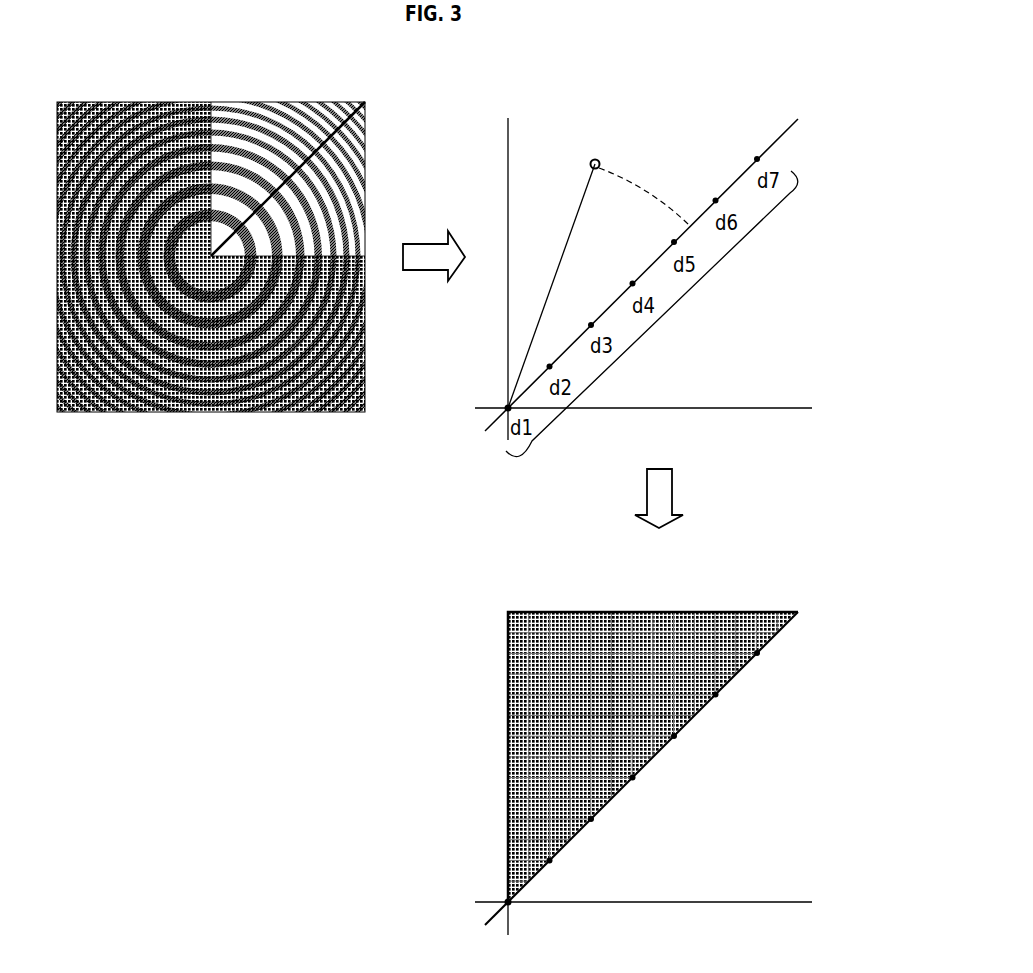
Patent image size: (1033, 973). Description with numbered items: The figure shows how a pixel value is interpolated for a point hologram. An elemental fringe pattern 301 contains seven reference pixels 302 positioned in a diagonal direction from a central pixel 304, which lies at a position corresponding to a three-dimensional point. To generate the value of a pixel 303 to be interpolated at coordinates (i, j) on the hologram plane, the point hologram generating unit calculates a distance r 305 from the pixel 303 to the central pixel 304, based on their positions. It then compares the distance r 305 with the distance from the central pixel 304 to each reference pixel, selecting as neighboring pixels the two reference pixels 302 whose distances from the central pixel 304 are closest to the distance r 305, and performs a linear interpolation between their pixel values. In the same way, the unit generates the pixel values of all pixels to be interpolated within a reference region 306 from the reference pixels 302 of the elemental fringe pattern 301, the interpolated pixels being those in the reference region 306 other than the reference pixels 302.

The elemental fringe pattern 301 is at (268, 204).
The reference pixels d1 through d7 302 is at (669, 310).
The pixel to be interpolated 303 is at (593, 159).
The central pixel d1 304 is at (508, 408).
The distance r 305 is at (569, 236).
The reference region 306 is at (643, 611).